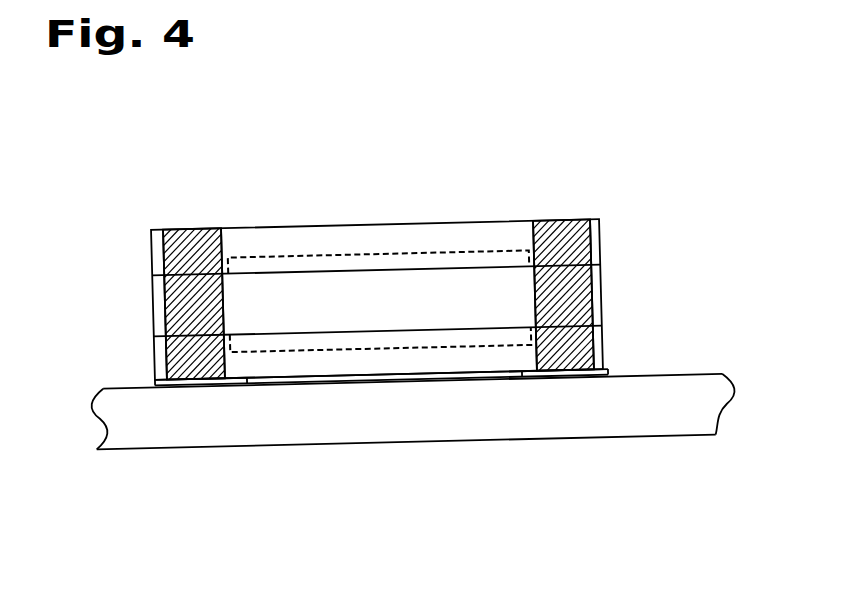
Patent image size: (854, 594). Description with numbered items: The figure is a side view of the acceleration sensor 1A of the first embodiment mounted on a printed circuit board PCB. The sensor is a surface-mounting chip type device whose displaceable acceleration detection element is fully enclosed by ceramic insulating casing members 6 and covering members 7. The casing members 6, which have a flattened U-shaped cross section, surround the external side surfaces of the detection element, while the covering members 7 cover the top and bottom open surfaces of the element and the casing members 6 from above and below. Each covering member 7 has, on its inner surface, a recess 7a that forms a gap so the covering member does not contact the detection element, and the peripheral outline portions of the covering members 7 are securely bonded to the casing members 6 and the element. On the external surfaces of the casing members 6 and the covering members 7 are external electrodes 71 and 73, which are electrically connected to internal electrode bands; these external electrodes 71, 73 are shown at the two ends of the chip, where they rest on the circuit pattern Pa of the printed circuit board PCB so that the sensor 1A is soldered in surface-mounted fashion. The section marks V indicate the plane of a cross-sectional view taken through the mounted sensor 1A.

The acceleration sensor 1A is at (502, 221).
The casing member 6 is at (283, 281).
The covering member 7 is at (422, 236).
The recess 7a is at (355, 253).
The external electrode 71 is at (592, 290).
The external electrode 73 is at (161, 308).
The circuit pattern Pa is at (202, 387).
The printed circuit board PCB is at (457, 437).
The section line V is at (138, 277).